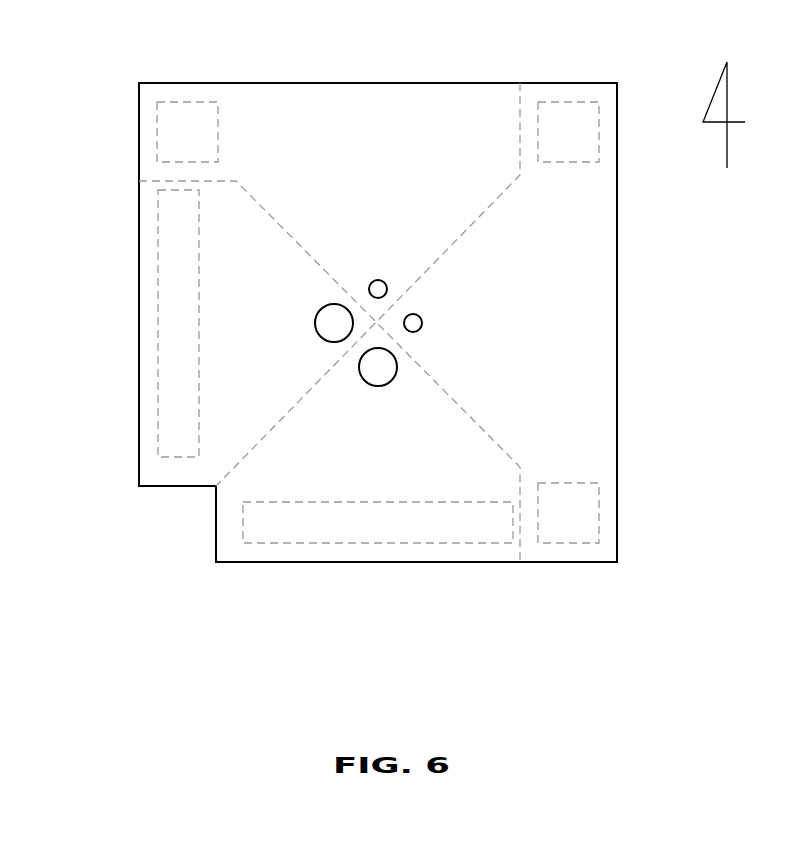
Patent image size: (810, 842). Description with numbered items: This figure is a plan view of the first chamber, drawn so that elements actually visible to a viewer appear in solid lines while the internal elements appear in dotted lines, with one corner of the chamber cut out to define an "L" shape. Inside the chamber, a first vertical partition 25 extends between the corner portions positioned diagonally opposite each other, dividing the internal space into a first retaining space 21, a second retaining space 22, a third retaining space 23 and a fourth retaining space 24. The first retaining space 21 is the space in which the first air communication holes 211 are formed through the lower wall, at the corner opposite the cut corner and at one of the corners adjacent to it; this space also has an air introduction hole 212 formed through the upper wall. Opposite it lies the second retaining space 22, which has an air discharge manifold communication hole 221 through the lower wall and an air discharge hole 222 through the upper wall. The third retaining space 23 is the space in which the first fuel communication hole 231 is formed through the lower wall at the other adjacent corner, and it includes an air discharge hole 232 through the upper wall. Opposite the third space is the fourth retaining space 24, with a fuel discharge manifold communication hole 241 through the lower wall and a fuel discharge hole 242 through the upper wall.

The first retaining space 21 is at (590, 400).
The first air communication holes 211 is at (560, 102).
The air introduction hole 212 is at (422, 322).
The second retaining space 22 is at (222, 240).
The air discharge manifold communication hole 221 is at (178, 403).
The air discharge hole 222 is at (315, 322).
The third retaining space 23 is at (266, 120).
The first fuel communication hole 231 is at (157, 124).
The air discharge hole 232 is at (378, 280).
The fourth retaining space 24 is at (282, 467).
The fuel discharge manifold communication hole 241 is at (375, 525).
The fuel discharge hole 242 is at (378, 386).
The first vertical partition 25 is at (493, 208).